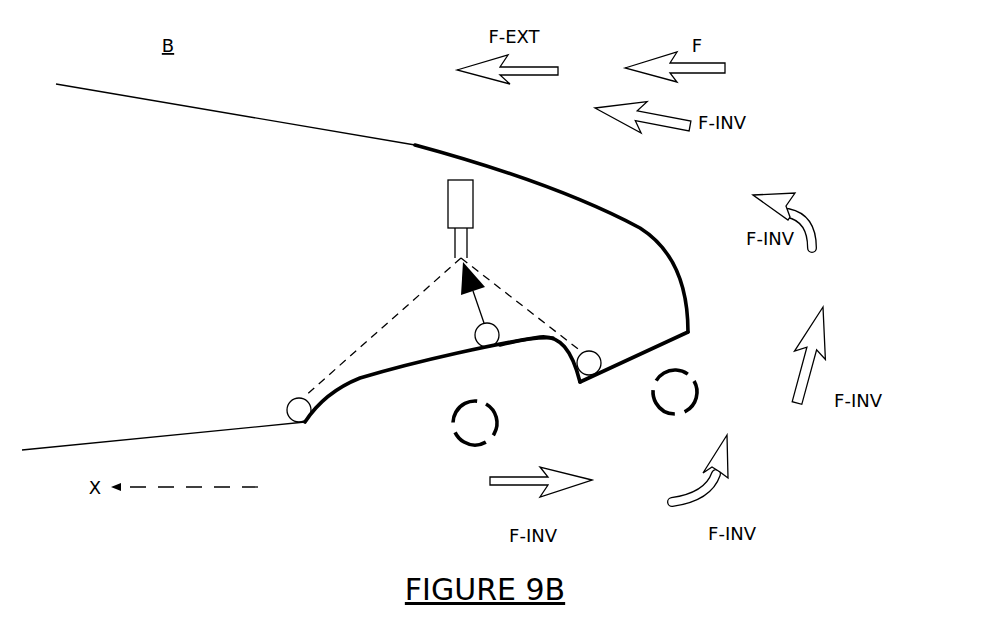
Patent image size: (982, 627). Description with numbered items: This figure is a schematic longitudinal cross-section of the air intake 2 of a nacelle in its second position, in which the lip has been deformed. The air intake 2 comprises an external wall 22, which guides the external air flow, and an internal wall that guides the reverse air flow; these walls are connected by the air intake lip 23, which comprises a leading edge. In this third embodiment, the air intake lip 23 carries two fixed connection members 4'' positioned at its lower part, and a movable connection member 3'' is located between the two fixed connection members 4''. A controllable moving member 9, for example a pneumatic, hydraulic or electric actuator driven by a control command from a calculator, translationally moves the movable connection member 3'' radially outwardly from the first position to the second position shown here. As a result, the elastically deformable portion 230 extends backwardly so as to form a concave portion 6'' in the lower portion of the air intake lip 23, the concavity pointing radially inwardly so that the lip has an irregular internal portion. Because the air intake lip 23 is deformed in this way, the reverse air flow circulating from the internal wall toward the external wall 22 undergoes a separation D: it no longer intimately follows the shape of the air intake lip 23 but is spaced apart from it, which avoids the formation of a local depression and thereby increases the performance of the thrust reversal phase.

The air intake 2 is at (372, 196).
The external wall 22 is at (417, 145).
The controllable moving member 9 is at (447, 207).
The elastically deformable portion 230 is at (348, 388).
The air intake lip 23 is at (598, 414).
The concave portion 6'' is at (550, 405).
The movable connection member 3'' is at (503, 367).
The fixed connection members 4'' is at (463, 418).
The separation D is at (452, 433).